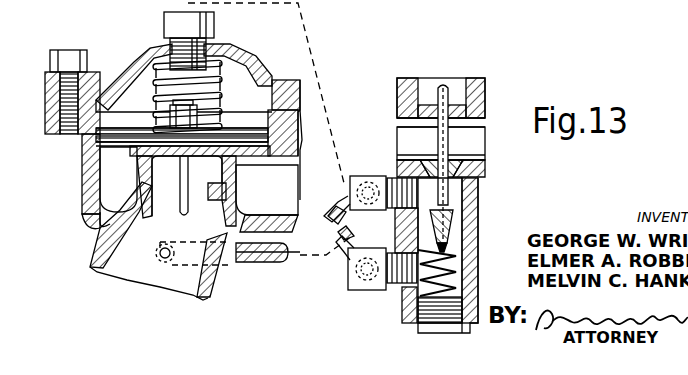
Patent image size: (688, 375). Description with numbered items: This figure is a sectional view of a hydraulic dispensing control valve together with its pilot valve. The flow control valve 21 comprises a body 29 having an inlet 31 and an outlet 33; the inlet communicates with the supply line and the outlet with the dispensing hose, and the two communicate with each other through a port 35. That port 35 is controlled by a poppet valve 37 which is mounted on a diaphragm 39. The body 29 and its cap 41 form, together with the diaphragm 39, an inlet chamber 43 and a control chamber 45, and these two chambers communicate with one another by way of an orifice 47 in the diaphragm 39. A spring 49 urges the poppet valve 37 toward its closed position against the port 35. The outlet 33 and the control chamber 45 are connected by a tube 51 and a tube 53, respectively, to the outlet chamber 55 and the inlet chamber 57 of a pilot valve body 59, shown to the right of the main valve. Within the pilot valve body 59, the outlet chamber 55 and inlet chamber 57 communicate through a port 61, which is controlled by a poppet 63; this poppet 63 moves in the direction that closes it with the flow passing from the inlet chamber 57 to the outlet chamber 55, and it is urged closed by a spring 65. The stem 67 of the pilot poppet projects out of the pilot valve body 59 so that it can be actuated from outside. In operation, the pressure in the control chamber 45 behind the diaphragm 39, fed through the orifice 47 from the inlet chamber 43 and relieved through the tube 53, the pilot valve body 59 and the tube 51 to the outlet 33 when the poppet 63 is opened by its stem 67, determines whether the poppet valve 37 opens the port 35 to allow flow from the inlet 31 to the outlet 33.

The flow control valve 21 is at (80, 186).
The body 29 is at (84, 205).
The inlet 31 is at (294, 175).
The outlet 33 is at (140, 270).
The port 35 is at (234, 194).
The poppet valve 37 is at (118, 162).
The diaphragm 39 is at (82, 145).
The cap 41 is at (282, 80).
The inlet chamber 43 is at (126, 200).
The control chamber 45 is at (143, 90).
The orifice 47 is at (250, 148).
The spring 49 is at (218, 76).
The tube 51 is at (262, 262).
The tube 53 is at (328, 77).
The outlet chamber 55 is at (452, 194).
The inlet chamber 57 is at (426, 248).
The pilot valve body 59 is at (398, 160).
The port 61 is at (470, 208).
The poppet 63 is at (457, 237).
The spring 65 is at (402, 295).
The stem 67 is at (446, 87).